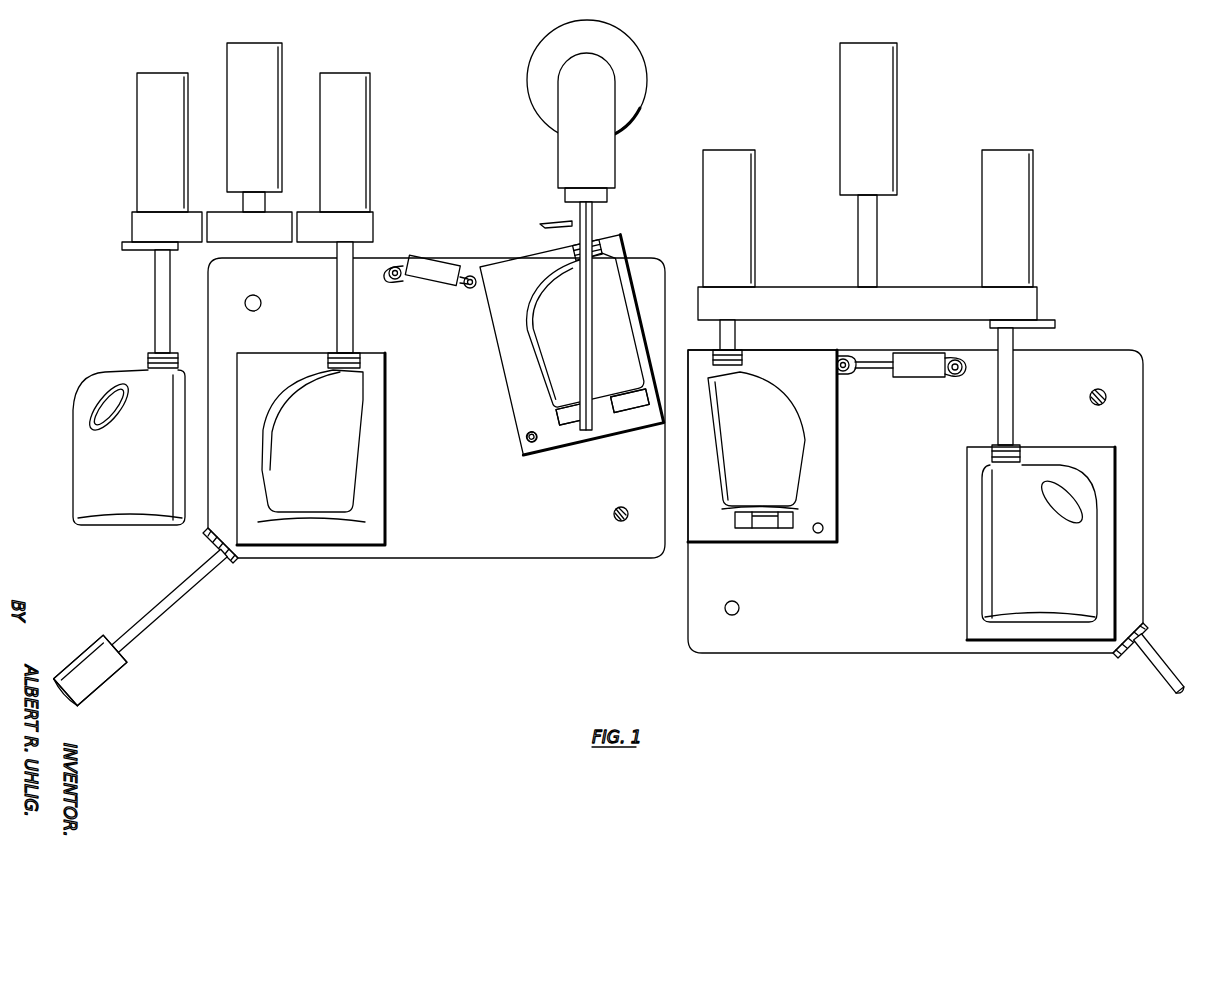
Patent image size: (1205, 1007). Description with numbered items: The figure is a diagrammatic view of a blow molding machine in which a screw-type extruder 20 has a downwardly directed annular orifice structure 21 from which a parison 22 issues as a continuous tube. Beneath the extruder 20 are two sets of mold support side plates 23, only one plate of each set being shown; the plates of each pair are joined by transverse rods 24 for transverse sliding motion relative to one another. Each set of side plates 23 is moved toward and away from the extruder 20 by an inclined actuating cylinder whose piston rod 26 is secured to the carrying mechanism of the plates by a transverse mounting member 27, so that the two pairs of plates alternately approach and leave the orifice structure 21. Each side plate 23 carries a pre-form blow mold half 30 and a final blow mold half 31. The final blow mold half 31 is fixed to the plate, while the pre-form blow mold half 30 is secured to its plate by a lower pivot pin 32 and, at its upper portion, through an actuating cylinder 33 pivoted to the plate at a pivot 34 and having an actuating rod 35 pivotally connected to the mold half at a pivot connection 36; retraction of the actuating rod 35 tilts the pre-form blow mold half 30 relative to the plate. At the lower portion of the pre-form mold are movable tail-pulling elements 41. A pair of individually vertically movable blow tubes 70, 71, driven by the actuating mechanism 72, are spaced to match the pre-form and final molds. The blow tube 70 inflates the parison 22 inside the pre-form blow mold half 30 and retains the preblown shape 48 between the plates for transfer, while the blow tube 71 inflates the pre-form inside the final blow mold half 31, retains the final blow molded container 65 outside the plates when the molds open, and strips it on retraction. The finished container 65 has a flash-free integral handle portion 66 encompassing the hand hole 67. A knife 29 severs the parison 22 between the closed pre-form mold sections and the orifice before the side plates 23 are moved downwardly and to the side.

The screw-type extruder 20 is at (655, 83).
The annular orifice structure 21 is at (608, 195).
The parison 22 is at (594, 221).
The mold support side plates 23 is at (497, 503).
The transverse rods 24 is at (259, 297).
The piston rod 26 is at (619, 623).
The transverse mounting member 27 is at (233, 562).
The knife 29 is at (542, 225).
The pre-form blow mold half 30 is at (514, 383).
The final blow mold half 31 is at (378, 461).
The lower pivot pin 32 is at (525, 437).
The actuating cylinder 33 is at (420, 287).
The pivot 34 is at (392, 280).
The actuating rod 35 is at (460, 285).
The pivot connection 36 is at (473, 290).
The tail-pulling elements 41 is at (607, 422).
The preblown shape 48 is at (317, 433).
The final blow molded container 65 is at (567, 492).
The integral handle portion 66 is at (106, 392).
The hand hole 67 is at (96, 404).
The blow tube 70 is at (340, 323).
The blow tube 71 is at (157, 287).
The actuating mechanism 72 is at (302, 52).